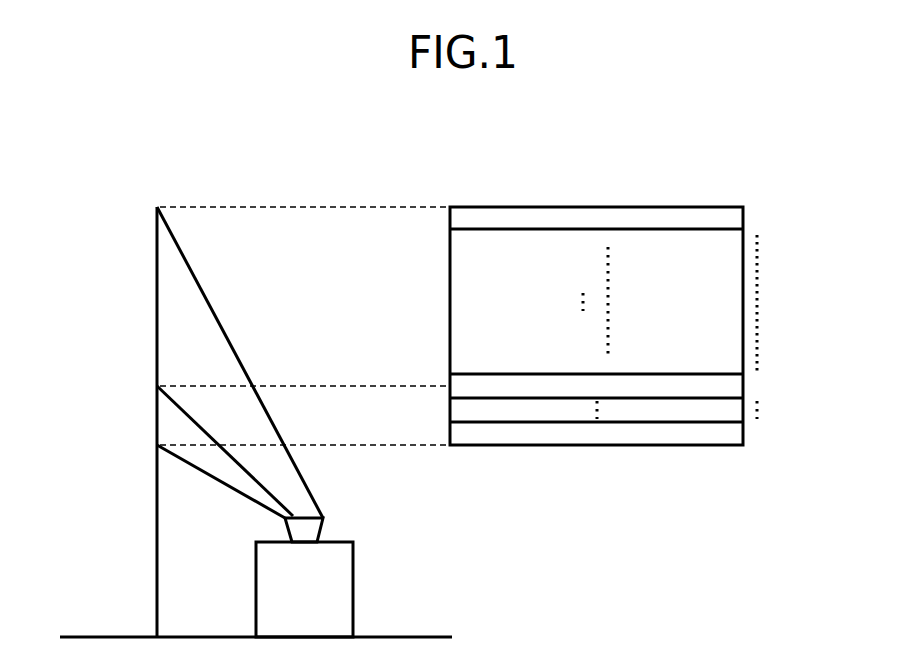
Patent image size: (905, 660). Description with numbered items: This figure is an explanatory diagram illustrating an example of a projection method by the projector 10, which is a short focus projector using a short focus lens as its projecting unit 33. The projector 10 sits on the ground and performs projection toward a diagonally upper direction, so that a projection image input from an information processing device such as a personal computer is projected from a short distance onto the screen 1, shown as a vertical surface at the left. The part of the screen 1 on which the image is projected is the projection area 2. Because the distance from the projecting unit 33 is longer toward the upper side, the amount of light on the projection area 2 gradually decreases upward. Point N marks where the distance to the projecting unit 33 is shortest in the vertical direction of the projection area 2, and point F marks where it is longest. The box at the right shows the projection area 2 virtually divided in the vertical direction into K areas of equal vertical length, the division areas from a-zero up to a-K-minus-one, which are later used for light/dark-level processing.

The screen 1 is at (157, 580).
The projection area 2 is at (157, 290).
The projector 10 is at (353, 593).
The projecting unit 33 is at (321, 532).